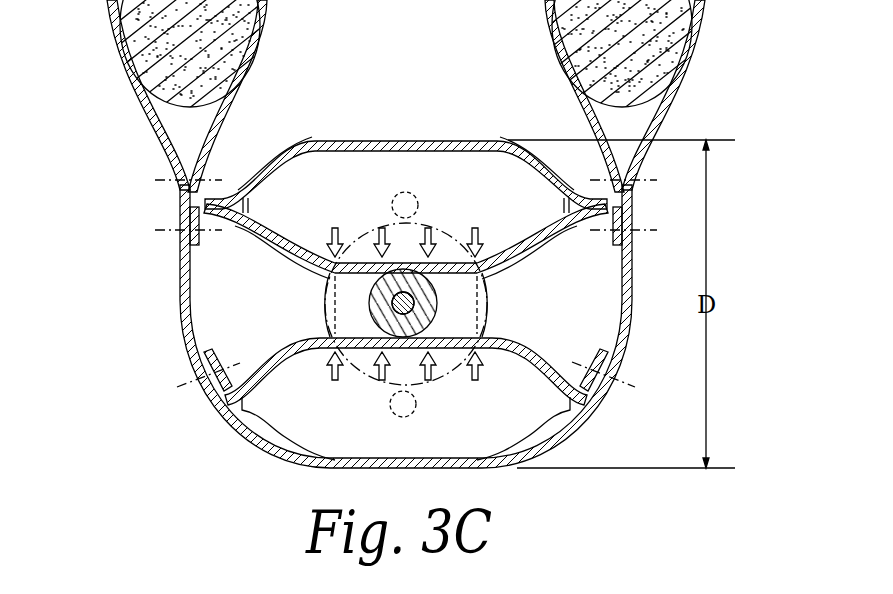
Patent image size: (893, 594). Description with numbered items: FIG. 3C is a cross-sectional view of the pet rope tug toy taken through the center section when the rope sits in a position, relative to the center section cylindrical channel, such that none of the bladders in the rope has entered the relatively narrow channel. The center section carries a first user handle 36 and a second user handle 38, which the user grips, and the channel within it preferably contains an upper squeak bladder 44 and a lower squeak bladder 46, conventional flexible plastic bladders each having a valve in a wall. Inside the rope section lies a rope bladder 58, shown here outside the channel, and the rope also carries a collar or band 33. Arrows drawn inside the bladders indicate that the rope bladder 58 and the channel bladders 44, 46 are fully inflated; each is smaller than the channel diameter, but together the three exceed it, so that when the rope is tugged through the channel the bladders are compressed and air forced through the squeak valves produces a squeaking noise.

The first user handle 36 is at (112, 37).
The second user handle 38 is at (697, 45).
The upper squeak bladder 44 is at (410, 166).
The lower squeak bladder 46 is at (473, 437).
The bladder 58 is at (330, 297).
The collar or band 33 is at (438, 303).